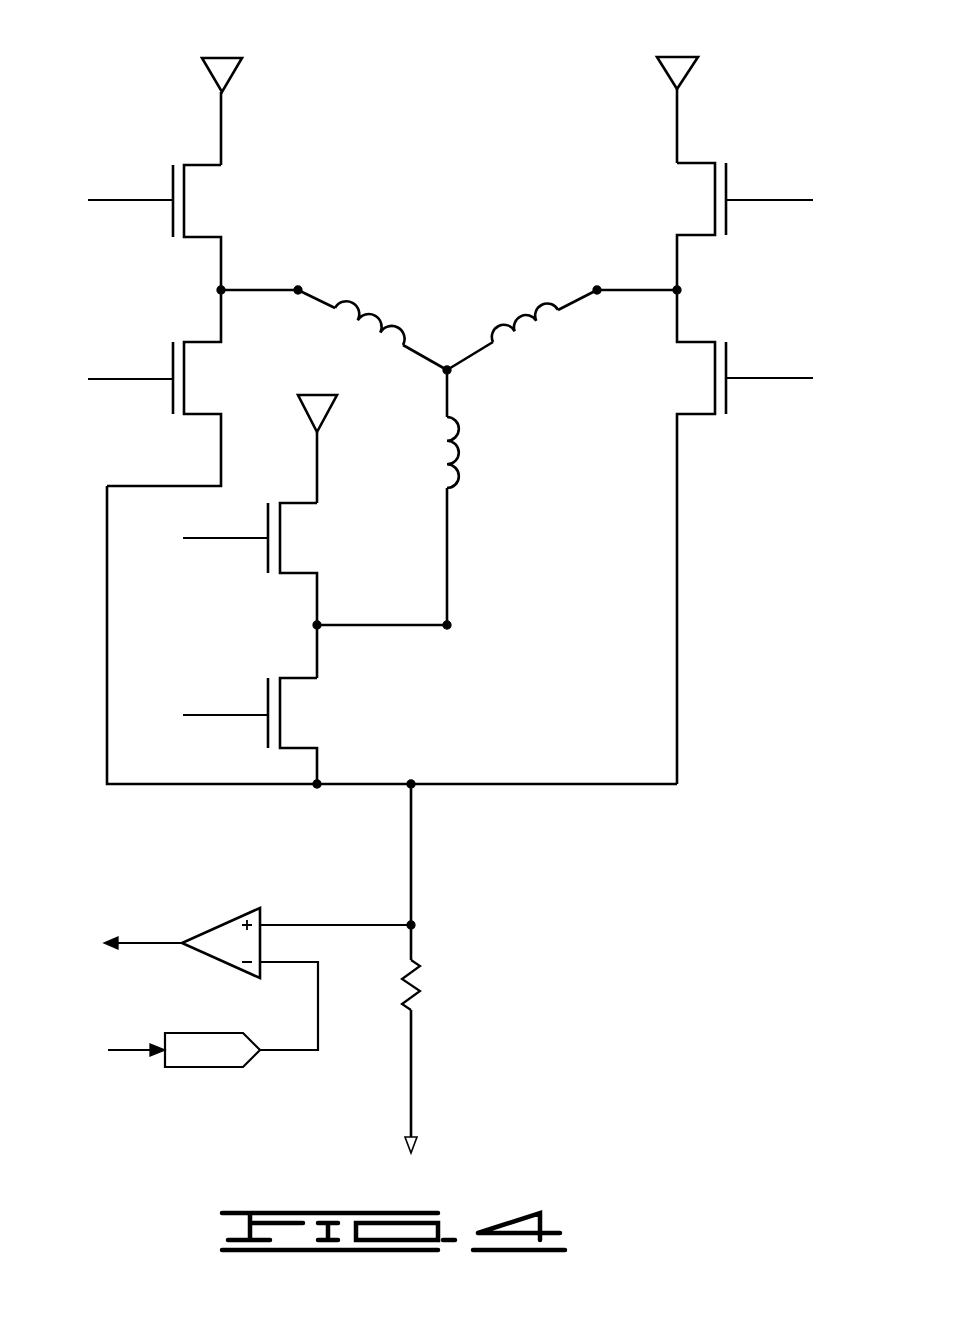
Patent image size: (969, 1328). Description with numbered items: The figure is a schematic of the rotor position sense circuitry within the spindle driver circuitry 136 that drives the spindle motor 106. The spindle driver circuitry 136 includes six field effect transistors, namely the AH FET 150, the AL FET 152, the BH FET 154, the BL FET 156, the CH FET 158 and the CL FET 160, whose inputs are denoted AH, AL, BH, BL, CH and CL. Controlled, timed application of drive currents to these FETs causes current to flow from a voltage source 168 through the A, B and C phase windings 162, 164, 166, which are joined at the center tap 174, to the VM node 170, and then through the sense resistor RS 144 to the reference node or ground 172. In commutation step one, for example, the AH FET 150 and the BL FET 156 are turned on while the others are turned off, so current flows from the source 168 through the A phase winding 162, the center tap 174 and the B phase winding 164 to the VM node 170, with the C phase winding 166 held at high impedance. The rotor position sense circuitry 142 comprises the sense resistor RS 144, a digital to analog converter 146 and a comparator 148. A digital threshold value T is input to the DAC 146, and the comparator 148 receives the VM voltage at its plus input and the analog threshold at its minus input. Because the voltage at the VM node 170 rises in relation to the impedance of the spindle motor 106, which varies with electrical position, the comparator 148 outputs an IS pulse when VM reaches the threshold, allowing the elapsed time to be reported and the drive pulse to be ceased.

The spindle driver circuitry 136 is at (152, 58).
The voltage source 168 is at (222, 56).
The AH FET 150 is at (172, 182).
The AL FET 152 is at (172, 362).
The BH FET 154 is at (727, 187).
The BL FET 156 is at (728, 396).
The CH FET 158 is at (266, 560).
The CL FET 160 is at (266, 740).
The spindle motor 106 is at (433, 382).
The A phase winding 162 is at (350, 325).
The B phase winding 164 is at (510, 340).
The C phase winding 166 is at (456, 486).
The center tap 174 is at (430, 385).
The VM node 170 is at (410, 770).
The rotor position sense circuitry 142 is at (377, 1031).
The sense resistor RS 144 is at (418, 1000).
The digital to analog converter 146 is at (220, 1068).
The comparator 148 is at (222, 924).
The reference node 172 is at (415, 1148).